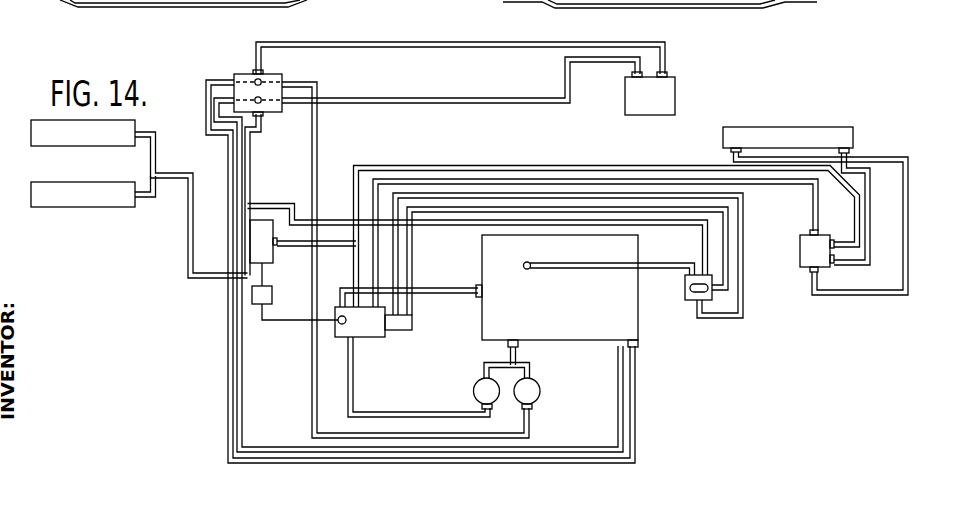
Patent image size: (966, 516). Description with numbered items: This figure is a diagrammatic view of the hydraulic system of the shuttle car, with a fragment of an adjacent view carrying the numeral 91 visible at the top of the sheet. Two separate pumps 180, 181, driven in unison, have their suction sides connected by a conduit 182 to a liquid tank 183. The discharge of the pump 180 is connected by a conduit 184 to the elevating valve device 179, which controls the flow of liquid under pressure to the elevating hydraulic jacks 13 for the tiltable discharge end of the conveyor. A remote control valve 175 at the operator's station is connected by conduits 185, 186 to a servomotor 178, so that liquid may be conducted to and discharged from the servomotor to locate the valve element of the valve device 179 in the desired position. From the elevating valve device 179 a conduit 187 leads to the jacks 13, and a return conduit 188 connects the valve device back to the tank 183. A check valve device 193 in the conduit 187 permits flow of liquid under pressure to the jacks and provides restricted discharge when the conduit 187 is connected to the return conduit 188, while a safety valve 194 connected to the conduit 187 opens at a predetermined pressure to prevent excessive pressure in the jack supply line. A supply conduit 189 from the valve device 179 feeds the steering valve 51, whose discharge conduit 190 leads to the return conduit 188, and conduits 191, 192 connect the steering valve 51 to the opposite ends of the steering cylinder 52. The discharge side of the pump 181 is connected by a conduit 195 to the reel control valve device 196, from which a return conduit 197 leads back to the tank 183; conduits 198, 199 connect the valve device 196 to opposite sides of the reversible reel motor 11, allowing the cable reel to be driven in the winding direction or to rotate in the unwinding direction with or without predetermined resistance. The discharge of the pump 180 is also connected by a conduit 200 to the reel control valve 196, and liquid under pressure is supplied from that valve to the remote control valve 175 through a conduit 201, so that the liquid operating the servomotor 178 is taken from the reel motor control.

The hydraulic motor 11 is at (668, 93).
The hydraulic jacks 13 is at (72, 137).
The steering valve 51 is at (805, 258).
The steering cylinder 52 is at (843, 133).
The adjacent figure part 91 is at (204, 0).
The remote control valve 175 is at (686, 294).
The servomotor 178 is at (413, 322).
The elevating valve device 179 is at (340, 340).
The pump 180 is at (473, 391).
The pump 181 is at (541, 391).
The conduit 182 is at (520, 358).
The liquid tank 183 is at (481, 247).
The conduit 184 is at (352, 388).
The conduit 185 is at (726, 248).
The conduit 186 is at (739, 219).
The conduit 187 is at (188, 240).
The return conduit 188 is at (437, 290).
The supply conduit 189 is at (540, 166).
The discharge conduit 190 is at (622, 172).
The conduit 191 is at (868, 227).
The conduit 192 is at (906, 248).
The check valve device 193 is at (272, 296).
The safety valve 194 is at (270, 257).
The conduit 195 is at (536, 447).
The valve device 196 is at (268, 81).
The return conduit 197 is at (233, 398).
The conduit 198 is at (470, 43).
The conduit 199 is at (427, 99).
The conduit 200 is at (316, 150).
The conduit 201 is at (331, 219).